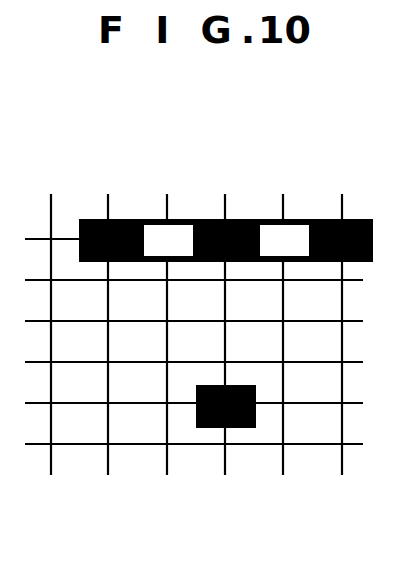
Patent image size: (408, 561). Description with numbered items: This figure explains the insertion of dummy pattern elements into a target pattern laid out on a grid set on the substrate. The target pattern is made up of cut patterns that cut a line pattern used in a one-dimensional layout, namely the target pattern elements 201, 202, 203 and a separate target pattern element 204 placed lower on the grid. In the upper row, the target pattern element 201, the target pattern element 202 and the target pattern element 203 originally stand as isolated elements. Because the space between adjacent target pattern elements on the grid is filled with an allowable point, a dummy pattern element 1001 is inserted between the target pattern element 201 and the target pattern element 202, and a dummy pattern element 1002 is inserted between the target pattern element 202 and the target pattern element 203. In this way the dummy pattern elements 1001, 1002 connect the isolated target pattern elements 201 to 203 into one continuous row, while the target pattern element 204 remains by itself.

The target pattern element 201 is at (93, 219).
The target pattern element 202 is at (245, 219).
The target pattern element 203 is at (363, 219).
The dummy pattern element 1001 is at (178, 219).
The dummy pattern element 1002 is at (297, 219).
The target pattern element 204 is at (247, 428).